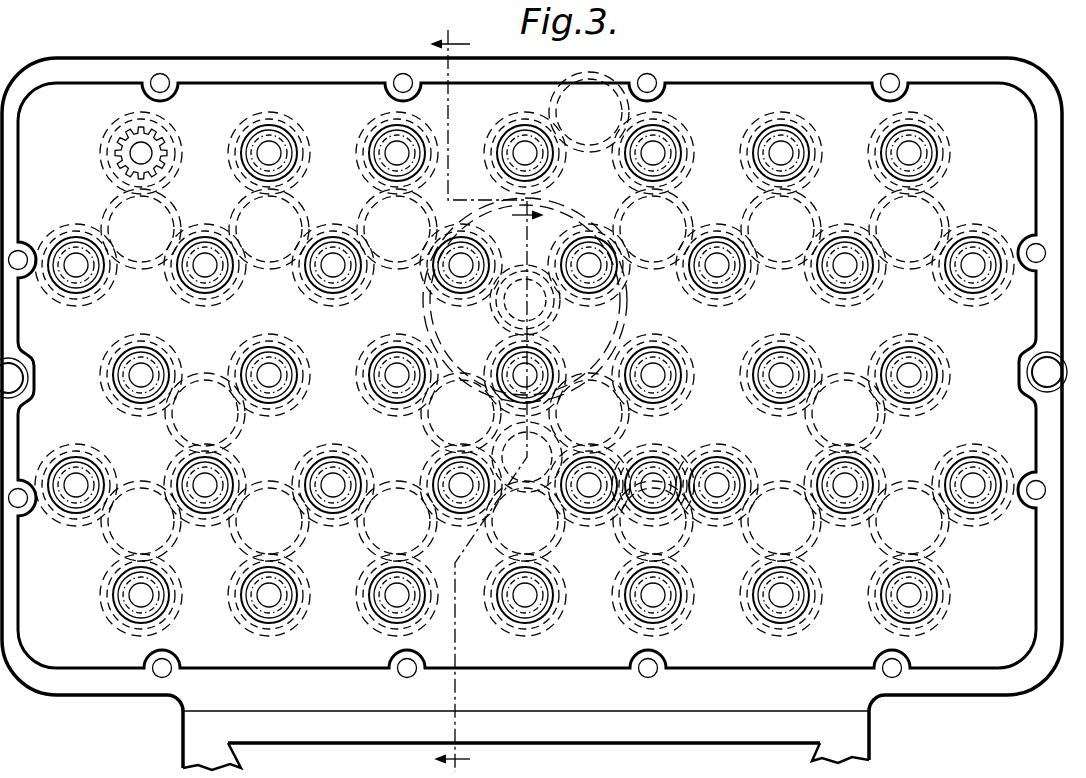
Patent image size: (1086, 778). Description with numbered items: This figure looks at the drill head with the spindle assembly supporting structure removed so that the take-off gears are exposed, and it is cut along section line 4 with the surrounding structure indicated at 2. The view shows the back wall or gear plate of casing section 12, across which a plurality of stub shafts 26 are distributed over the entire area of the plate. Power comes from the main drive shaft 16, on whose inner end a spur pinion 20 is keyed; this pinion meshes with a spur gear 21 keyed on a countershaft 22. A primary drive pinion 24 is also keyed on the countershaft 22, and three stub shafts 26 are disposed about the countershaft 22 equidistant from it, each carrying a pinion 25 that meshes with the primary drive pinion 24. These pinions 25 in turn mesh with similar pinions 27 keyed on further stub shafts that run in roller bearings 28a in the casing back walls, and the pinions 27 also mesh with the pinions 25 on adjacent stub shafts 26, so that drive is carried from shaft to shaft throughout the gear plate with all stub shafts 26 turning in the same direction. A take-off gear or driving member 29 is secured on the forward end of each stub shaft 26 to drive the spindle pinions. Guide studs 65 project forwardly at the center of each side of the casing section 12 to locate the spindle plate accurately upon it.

The frame casing 2 is at (170, 218).
The section line 4- 4 is at (487, 391).
The casing section 12 is at (289, 55).
The main drive shaft 16 is at (492, 440).
The spur pinion 20 is at (606, 442).
The spur gear 21 is at (628, 308).
The countershaft 22 is at (548, 318).
The primary drive pinion 24 is at (494, 316).
The pinion 25 is at (166, 180).
The stub shaft 26 is at (524, 382).
The pinion 27 is at (589, 152).
The roller bearing 28a is at (440, 250).
The take-off gear 29 is at (128, 163).
The guide stud 65 is at (24, 372).